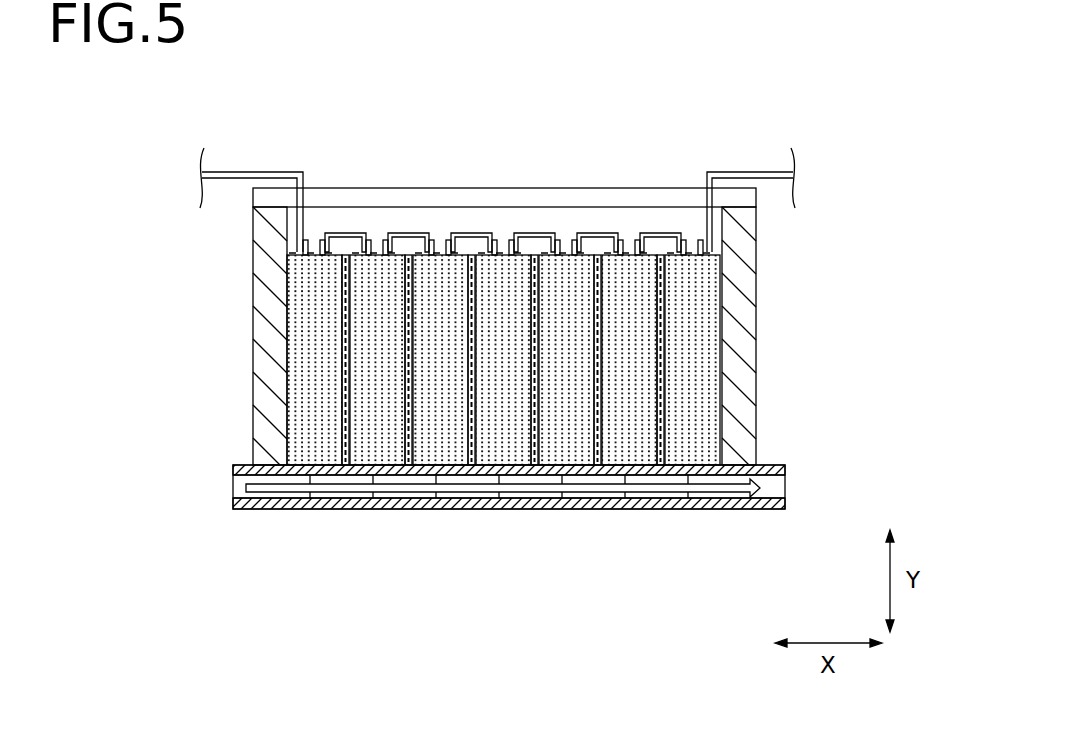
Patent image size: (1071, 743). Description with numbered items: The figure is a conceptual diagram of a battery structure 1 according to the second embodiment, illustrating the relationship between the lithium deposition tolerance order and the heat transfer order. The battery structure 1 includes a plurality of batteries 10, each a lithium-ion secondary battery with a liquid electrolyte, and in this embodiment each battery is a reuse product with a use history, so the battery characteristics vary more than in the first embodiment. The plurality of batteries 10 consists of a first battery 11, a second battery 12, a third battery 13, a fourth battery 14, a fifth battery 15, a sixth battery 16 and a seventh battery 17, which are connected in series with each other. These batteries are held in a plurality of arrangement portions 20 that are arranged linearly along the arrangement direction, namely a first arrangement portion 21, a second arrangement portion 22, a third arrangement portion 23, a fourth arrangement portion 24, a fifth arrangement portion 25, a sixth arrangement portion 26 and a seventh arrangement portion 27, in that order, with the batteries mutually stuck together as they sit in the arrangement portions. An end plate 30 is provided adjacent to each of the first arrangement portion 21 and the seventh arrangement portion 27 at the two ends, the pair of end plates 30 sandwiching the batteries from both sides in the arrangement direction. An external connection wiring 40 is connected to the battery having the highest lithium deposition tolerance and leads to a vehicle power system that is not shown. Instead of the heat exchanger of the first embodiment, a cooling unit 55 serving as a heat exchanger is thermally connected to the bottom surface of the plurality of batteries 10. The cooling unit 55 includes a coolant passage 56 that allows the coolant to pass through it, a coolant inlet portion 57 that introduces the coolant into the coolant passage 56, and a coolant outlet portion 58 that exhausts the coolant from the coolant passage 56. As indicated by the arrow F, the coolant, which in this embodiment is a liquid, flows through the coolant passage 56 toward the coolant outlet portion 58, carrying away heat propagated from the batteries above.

The battery structure 1 is at (735, 71).
The batteries 10 is at (278, 122).
The first battery 11 is at (318, 272).
The second battery 12 is at (379, 272).
The third battery 13 is at (440, 272).
The fourth battery 14 is at (500, 272).
The fifth battery 15 is at (561, 272).
The sixth battery 16 is at (622, 272).
The seventh battery 17 is at (683, 272).
The arrangement portions 20 is at (290, 573).
The first arrangement portion 21 is at (315, 512).
The second arrangement portion 22 is at (378, 512).
The third arrangement portion 23 is at (441, 512).
The fourth arrangement portion 24 is at (504, 512).
The fifth arrangement portion 25 is at (567, 512).
The sixth arrangement portion 26 is at (630, 512).
The seventh arrangement portion 27 is at (693, 512).
The end plate 30 is at (258, 322).
The external connection wiring 40 is at (250, 172).
The cooling unit 55 is at (250, 466).
The coolant passage 56 is at (275, 496).
The coolant inlet portion 57 is at (235, 487).
The coolant outlet portion 58 is at (777, 487).
The arrow F is at (715, 490).